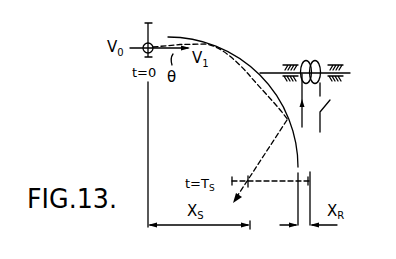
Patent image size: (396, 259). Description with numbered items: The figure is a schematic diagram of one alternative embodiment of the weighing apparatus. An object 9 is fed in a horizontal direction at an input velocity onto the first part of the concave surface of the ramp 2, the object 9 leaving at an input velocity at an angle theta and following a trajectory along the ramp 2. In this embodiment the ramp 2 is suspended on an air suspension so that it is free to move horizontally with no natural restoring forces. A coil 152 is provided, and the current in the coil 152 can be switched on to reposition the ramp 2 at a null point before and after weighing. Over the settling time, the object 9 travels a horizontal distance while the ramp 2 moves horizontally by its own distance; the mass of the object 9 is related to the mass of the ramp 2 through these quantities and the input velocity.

The object 9 is at (144, 44).
The ramp 2 is at (238, 57).
The coil 152 is at (312, 60).